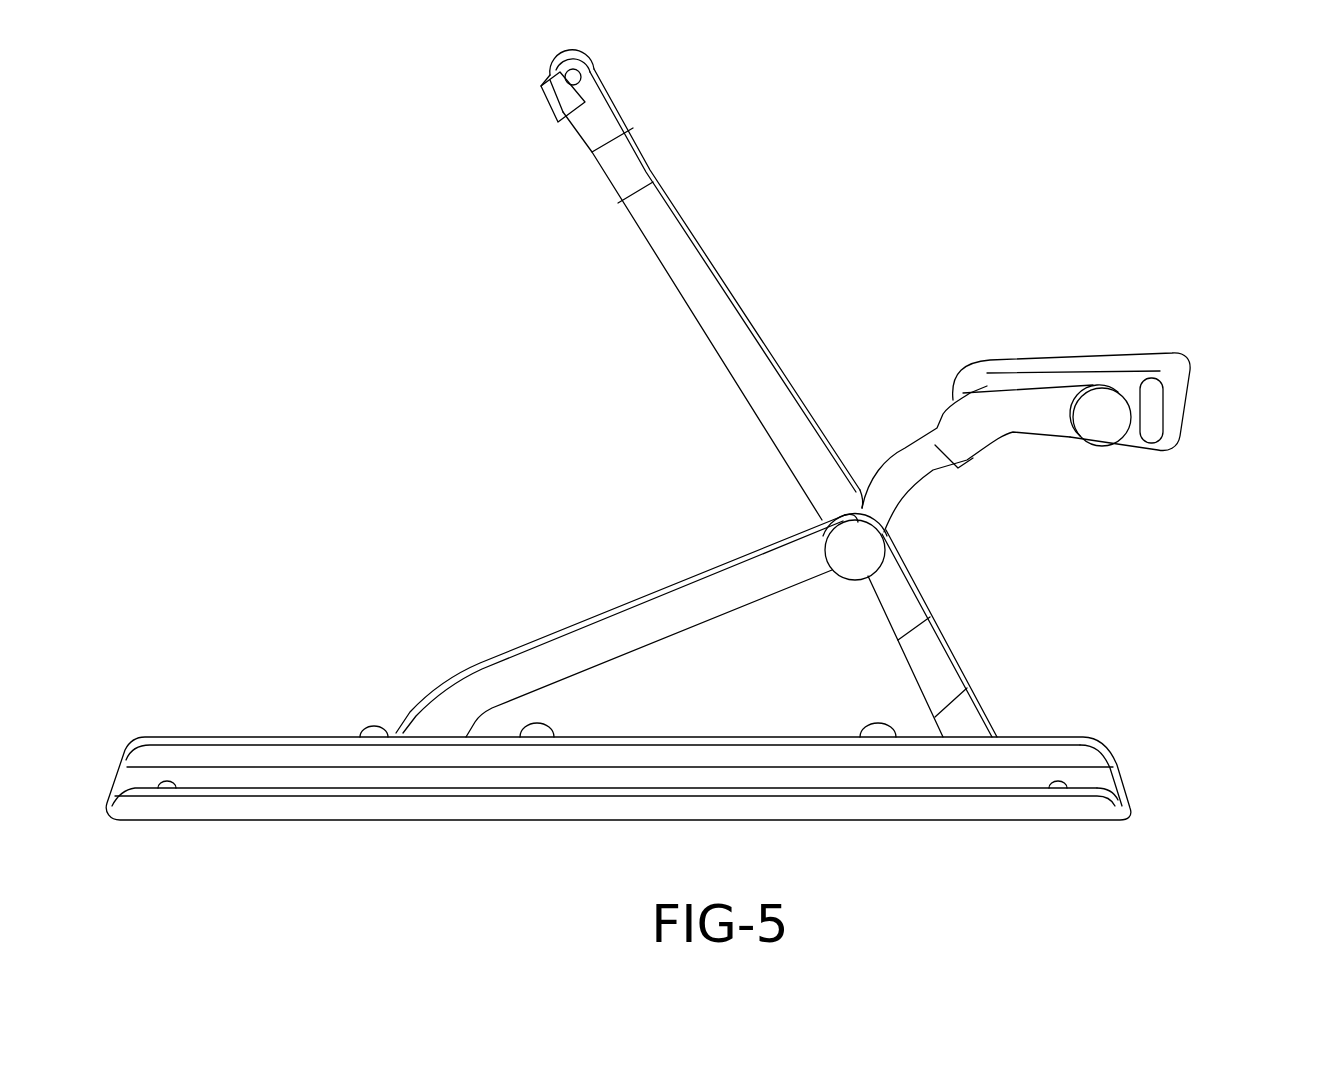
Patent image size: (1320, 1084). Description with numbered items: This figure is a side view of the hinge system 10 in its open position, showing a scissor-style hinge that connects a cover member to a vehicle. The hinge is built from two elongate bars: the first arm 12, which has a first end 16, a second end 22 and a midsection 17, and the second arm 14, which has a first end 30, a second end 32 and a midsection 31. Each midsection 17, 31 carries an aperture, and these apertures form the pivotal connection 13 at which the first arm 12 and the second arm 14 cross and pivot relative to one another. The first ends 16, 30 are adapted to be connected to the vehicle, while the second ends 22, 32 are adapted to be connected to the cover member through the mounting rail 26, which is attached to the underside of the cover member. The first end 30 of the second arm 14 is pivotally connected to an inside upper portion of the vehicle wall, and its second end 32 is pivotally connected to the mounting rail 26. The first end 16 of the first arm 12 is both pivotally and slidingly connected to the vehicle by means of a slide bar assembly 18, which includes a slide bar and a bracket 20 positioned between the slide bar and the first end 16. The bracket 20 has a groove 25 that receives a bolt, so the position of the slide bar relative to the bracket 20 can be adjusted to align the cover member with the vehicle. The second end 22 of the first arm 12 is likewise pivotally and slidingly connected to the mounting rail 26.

The hinge system 10 is at (1027, 193).
The first arm 12 is at (607, 617).
The pivotal connection 13 is at (838, 593).
The second arm 14 is at (762, 377).
The first end of the first arm 16 is at (1045, 407).
The midsection of the first arm 17 is at (788, 557).
The slide bar assembly 18 is at (1197, 345).
The bracket 20 is at (1180, 413).
The second end of the first arm 22 is at (412, 720).
The groove 25 is at (1135, 447).
The mounting rail 26 is at (215, 810).
The first end of the second arm 30 is at (590, 98).
The midsection of the second arm 31 is at (860, 510).
The second end of the second arm 32 is at (952, 697).